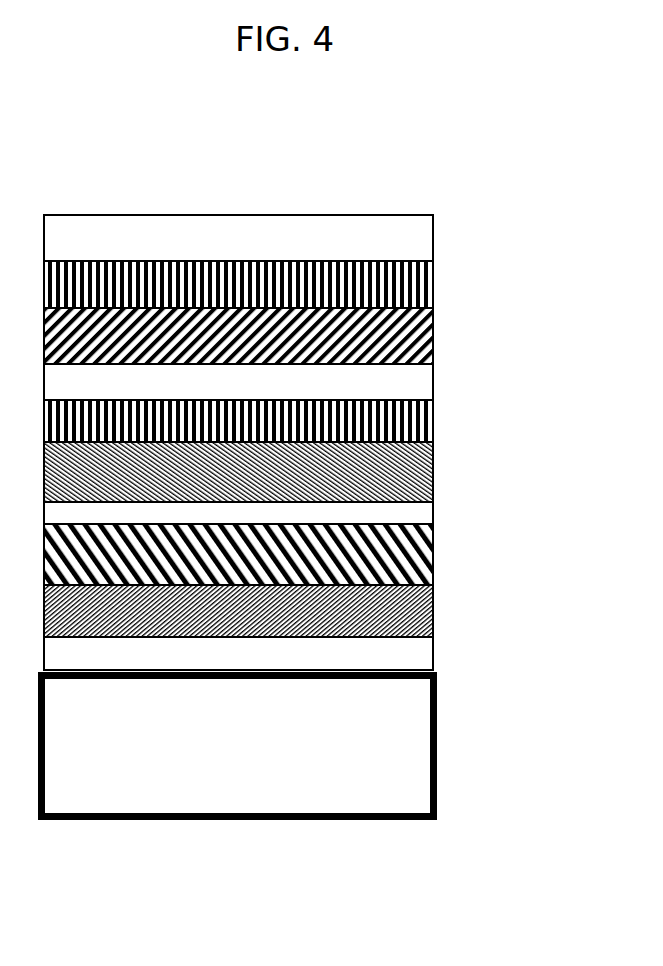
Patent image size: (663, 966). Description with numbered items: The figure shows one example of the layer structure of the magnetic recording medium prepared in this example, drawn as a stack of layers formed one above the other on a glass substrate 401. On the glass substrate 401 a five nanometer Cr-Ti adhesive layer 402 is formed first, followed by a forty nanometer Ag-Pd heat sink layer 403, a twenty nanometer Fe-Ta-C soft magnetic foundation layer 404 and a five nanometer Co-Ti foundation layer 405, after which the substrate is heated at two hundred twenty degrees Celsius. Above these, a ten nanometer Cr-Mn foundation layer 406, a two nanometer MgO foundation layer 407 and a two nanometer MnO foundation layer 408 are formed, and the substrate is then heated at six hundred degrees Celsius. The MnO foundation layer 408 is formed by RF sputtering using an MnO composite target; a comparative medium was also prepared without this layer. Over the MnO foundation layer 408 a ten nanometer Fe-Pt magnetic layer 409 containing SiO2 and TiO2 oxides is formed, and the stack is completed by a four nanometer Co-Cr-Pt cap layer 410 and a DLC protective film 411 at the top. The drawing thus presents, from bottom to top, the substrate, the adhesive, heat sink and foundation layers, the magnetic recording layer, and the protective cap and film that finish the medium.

The glass substrate 401 is at (437, 742).
The adhesive layer 402 is at (433, 658).
The heat sink layer 403 is at (433, 612).
The soft magnetic foundation layer 404 is at (433, 553).
The foundation layer 405 is at (433, 513).
The foundation layer 406 is at (433, 470).
The MgO foundation layer 407 is at (433, 417).
The MnO foundation layer 408 is at (433, 370).
The magnetic layer 409 is at (433, 333).
The cap layer 410 is at (433, 280).
The DLC protective film 411 is at (433, 238).